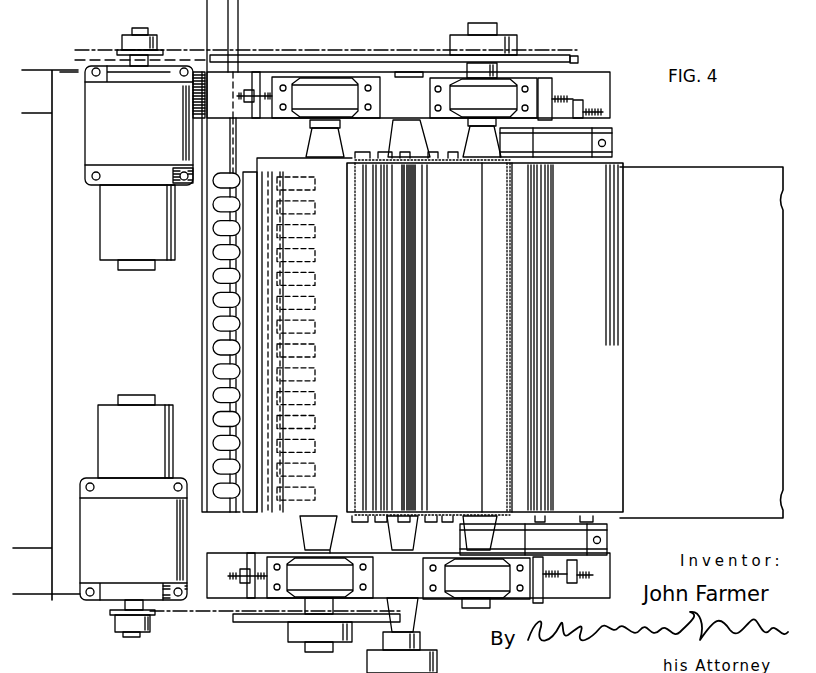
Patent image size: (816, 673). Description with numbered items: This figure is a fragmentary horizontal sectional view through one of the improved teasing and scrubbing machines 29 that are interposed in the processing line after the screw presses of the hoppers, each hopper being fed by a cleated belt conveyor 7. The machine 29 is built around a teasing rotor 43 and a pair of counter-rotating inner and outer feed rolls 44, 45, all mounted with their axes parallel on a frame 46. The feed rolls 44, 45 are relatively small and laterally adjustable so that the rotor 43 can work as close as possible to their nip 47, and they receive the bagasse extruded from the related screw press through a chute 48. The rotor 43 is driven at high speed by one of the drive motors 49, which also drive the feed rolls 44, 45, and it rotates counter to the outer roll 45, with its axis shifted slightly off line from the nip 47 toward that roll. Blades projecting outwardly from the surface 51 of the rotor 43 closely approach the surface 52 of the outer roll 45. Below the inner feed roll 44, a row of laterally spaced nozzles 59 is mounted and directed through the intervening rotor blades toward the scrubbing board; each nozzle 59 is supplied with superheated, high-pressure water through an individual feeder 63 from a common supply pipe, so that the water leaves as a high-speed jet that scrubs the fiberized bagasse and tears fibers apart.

The conveyor 7 is at (722, 192).
The teasing and scrubbing machine 29 is at (44, 334).
The teasing rotor 43 is at (413, 342).
The inner feed roll 44 is at (270, 172).
The outer feed roll 45 is at (553, 305).
The frame 46 is at (38, 69).
The nip 47 is at (400, 288).
The chute 48 is at (352, 333).
The drive motor 49 is at (146, 132).
The rotor surface 51 is at (402, 382).
The outer roll surface 52 is at (555, 374).
The nozzle 59 is at (315, 208).
The feeder 63 is at (212, 323).